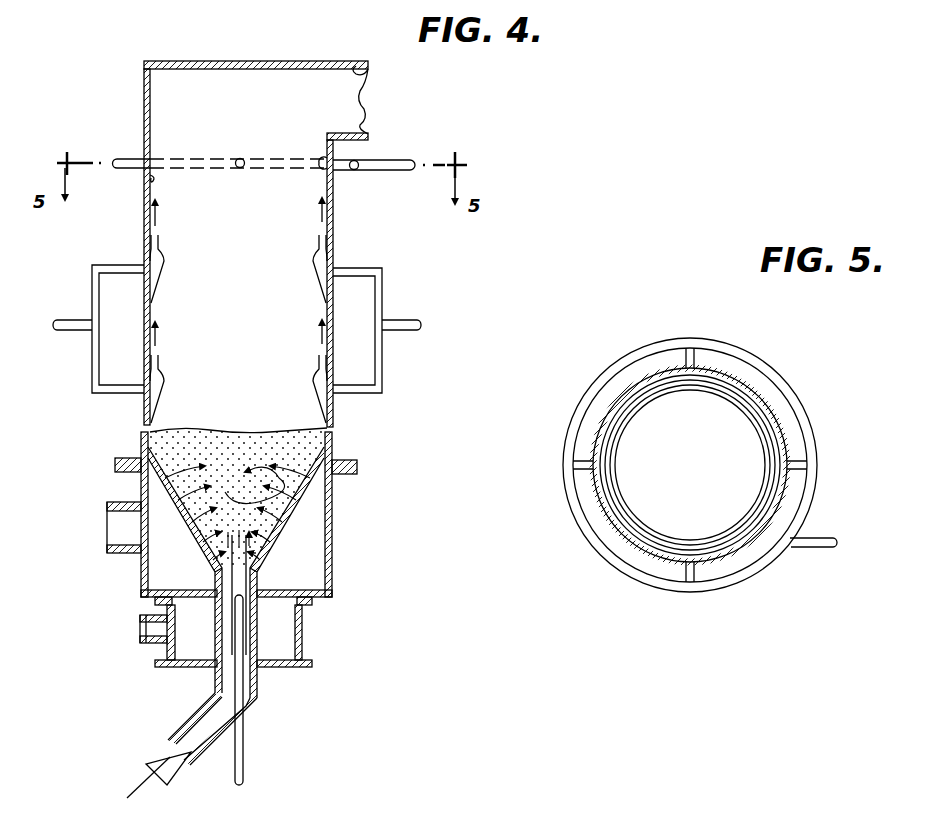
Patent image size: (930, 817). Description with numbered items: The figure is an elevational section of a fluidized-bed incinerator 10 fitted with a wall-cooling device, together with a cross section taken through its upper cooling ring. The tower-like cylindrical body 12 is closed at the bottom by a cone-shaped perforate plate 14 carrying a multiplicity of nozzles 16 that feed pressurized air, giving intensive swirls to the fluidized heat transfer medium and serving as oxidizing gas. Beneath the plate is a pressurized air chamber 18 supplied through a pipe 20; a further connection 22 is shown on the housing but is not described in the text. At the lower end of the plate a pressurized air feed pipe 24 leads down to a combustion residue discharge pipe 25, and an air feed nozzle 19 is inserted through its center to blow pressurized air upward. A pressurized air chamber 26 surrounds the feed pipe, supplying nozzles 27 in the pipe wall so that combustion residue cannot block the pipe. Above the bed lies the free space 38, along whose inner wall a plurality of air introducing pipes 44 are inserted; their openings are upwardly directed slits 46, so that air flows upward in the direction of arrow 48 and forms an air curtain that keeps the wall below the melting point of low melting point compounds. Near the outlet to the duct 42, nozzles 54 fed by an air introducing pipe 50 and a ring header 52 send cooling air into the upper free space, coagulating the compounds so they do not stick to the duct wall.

In FIG. 4, the incinerator 10 is at (150, 223).
In FIG. 5, the incinerator 10 is at (770, 402).
In FIG. 4, the cylindrical body 12 is at (151, 178).
In FIG. 4, the cone-shaped perforate plate 14 is at (290, 514).
In FIG. 4, the nozzles 16 is at (271, 554).
In FIG. 4, the pressurized air chamber 18 is at (332, 556).
In FIG. 4, the air feed nozzle 19 is at (244, 754).
In FIG. 4, the pipe 20 is at (121, 551).
In FIG. 4, the outlet pipe 22 is at (150, 640).
In FIG. 4, the pressurized air feed pipe 24 is at (264, 688).
In FIG. 4, the combustion residue discharge pipe 25 is at (190, 722).
In FIG. 4, the pressurized air chamber 26 is at (304, 630).
In FIG. 4, the nozzles 27 is at (250, 624).
In FIG. 4, the free space 38 is at (255, 318).
In FIG. 5, the free space 38 is at (695, 488).
In FIG. 4, the duct 42 is at (375, 82).
In FIG. 4, the air introducing pipes 44 is at (99, 265).
In FIG. 4, the slits 46 is at (162, 280).
In FIG. 5, the slits 46 is at (656, 392).
In FIG. 4, the arrow 48 is at (160, 222).
In FIG. 4, the air introducing pipe 50 is at (380, 159).
In FIG. 5, the air introducing pipe 50 is at (808, 548).
In FIG. 4, the ring header 52 is at (344, 170).
In FIG. 5, the ring header 52 is at (634, 578).
In FIG. 4, the nozzles 54 is at (239, 160).
In FIG. 5, the nozzles 54 is at (777, 466).